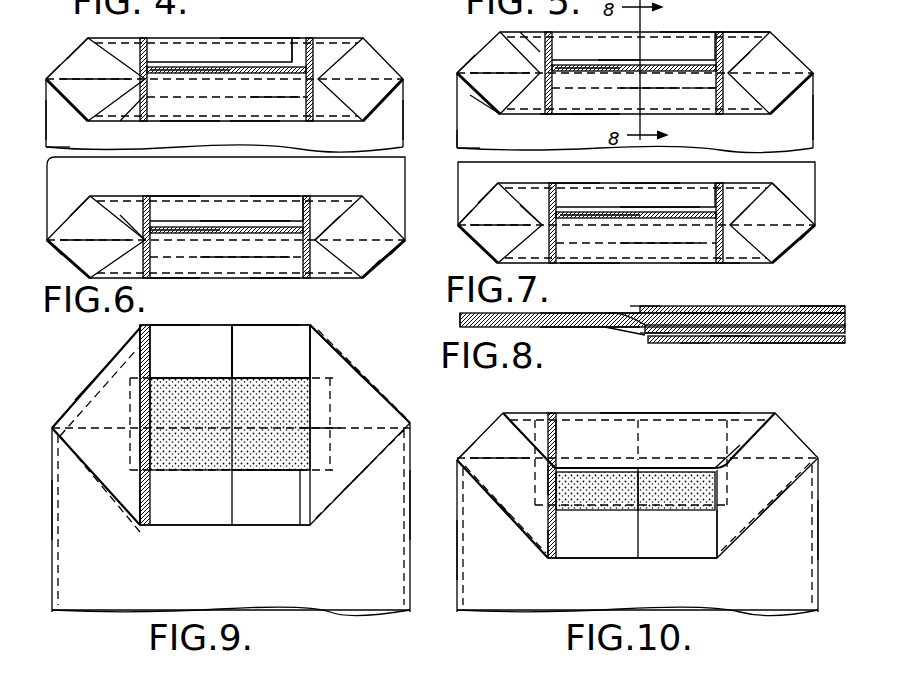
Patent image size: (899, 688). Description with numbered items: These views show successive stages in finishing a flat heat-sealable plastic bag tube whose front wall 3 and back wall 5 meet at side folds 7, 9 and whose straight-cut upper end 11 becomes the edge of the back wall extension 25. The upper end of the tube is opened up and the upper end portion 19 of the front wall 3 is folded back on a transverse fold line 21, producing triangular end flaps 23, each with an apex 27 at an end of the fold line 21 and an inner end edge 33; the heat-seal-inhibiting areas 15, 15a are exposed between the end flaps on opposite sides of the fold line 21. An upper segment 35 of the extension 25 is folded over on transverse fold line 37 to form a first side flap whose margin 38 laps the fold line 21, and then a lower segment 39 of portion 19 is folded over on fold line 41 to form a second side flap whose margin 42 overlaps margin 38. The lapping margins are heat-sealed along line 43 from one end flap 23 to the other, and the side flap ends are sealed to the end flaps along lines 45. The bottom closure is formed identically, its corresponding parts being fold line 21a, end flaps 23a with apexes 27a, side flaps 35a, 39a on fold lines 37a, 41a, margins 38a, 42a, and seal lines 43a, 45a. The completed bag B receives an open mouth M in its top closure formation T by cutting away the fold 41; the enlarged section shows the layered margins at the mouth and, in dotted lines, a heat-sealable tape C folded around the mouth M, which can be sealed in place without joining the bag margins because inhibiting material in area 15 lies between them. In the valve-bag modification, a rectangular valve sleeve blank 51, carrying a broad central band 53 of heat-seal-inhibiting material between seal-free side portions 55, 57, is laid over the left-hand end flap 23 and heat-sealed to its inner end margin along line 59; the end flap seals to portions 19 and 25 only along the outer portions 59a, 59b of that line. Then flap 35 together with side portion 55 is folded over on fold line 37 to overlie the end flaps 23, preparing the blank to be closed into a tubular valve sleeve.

In FIG. 8, the front wall 3 is at (792, 343).
In FIG. 9, the front wall 3 is at (248, 568).
In FIG. 10, the front wall 3 is at (638, 599).
In FIG. 8, the back wall 5 is at (726, 340).
In FIG. 4, the side fold 7 is at (46, 115).
In FIG. 5, the side fold 7 is at (458, 148).
In FIG. 9, the side fold 7 is at (52, 520).
In FIG. 10, the side fold 7 is at (457, 556).
In FIG. 4, the side fold 9 is at (405, 120).
In FIG. 5, the side fold 9 is at (813, 105).
In FIG. 9, the side fold 9 is at (410, 505).
In FIG. 10, the side fold 9 is at (818, 550).
In FIG. 9, the upper end 11 is at (232, 335).
In FIG. 10, the upper end 11 is at (650, 468).
In FIG. 8, the heat-seal-inhibiting area 15 is at (702, 312).
In FIG. 9, the heat-seal-inhibiting area 15 is at (264, 468).
In FIG. 10, the heat-seal-inhibiting area 15 is at (672, 505).
In FIG. 8, the heat-seal-inhibiting area 15a is at (618, 334).
In FIG. 9, the heat-seal-inhibiting area 15a is at (285, 390).
In FIG. 8, the upper end portion of the front wall 19 is at (758, 343).
In FIG. 10, the upper end portion of the front wall 19 is at (712, 560).
In FIG. 4, the fold line 21 is at (72, 82).
In FIG. 5, the fold line 21 is at (494, 72).
In FIG. 8, the fold line 21 is at (656, 343).
In FIG. 9, the fold line 21 is at (300, 428).
In FIG. 10, the fold line 21 is at (500, 462).
In FIG. 6, the fold line 21a is at (74, 243).
In FIG. 7, the fold line 21a is at (484, 227).
In FIG. 4, the end flap 23 is at (85, 60).
In FIG. 5, the end flap 23 is at (488, 106).
In FIG. 9, the end flap 23 is at (92, 398).
In FIG. 10, the end flap 23 is at (500, 500).
In FIG. 6, the end flap 23a is at (82, 218).
In FIG. 7, the end flap 23a is at (490, 205).
In FIG. 8, the upward extension of the back wall 25 is at (565, 330).
In FIG. 9, the upward extension of the back wall 25 is at (300, 330).
In FIG. 4, the apex 27 is at (47, 78).
In FIG. 5, the apex 27 is at (458, 72).
In FIG. 9, the apex 27 is at (52, 428).
In FIG. 10, the apex 27 is at (458, 460).
In FIG. 6, the apex 27a is at (48, 245).
In FIG. 7, the apex 27a is at (458, 226).
In FIG. 9, the inner end edge 33 is at (302, 490).
In FIG. 4, the upper segment of back wall extension 35 is at (236, 45).
In FIG. 5, the upper segment of back wall extension 35 is at (690, 42).
In FIG. 8, the upper segment of back wall extension 35 is at (566, 313).
In FIG. 10, the upper segment of back wall extension 35 is at (700, 425).
In FIG. 6, the first side flap 35a is at (170, 202).
In FIG. 7, the first side flap 35a is at (640, 195).
In FIG. 4, the transverse fold line 37 is at (276, 40).
In FIG. 5, the transverse fold line 37 is at (730, 30).
In FIG. 8, the transverse fold line 37 is at (460, 318).
In FIG. 9, the transverse fold line 37 is at (340, 380).
In FIG. 10, the transverse fold line 37 is at (662, 412).
In FIG. 6, the transverse fold line 37a is at (276, 196).
In FIG. 7, the transverse fold line 37a is at (578, 176).
In FIG. 4, the margin 38 is at (250, 98).
In FIG. 5, the margin 38 is at (640, 95).
In FIG. 8, the margin 38 is at (692, 343).
In FIG. 10, the margin 38 is at (722, 463).
In FIG. 6, the margin 38a is at (214, 260).
In FIG. 7, the margin 38a is at (636, 243).
In FIG. 4, the lower segment of front wall portion 39 is at (182, 118).
In FIG. 5, the lower segment of front wall portion 39 is at (598, 104).
In FIG. 8, the lower segment of front wall portion 39 is at (716, 312).
In FIG. 6, the second side flap 39a is at (160, 272).
In FIG. 7, the second side flap 39a is at (580, 255).
In FIG. 4, the transverse fold line 41 is at (225, 122).
In FIG. 9, the transverse fold line 41 is at (350, 474).
In FIG. 6, the transverse fold line 41a is at (278, 279).
In FIG. 7, the transverse fold line 41a is at (690, 264).
In FIG. 4, the margin 42 is at (300, 55).
In FIG. 5, the margin 42 is at (598, 58).
In FIG. 8, the margin 42 is at (640, 309).
In FIG. 6, the margin 42a is at (232, 214).
In FIG. 7, the margin 42a is at (664, 200).
In FIG. 4, the heat-seal line 43 is at (172, 70).
In FIG. 5, the heat-seal line 43 is at (572, 66).
In FIG. 8, the heat-seal line 43 is at (620, 312).
In FIG. 6, the heat-seal line 43a is at (186, 228).
In FIG. 7, the heat-seal line 43a is at (608, 213).
In FIG. 4, the heat-seal line 45 is at (140, 110).
In FIG. 5, the heat-seal line 45 is at (505, 40).
In FIG. 6, the heat-seal line 45a is at (140, 220).
In FIG. 7, the heat-seal line 45a is at (540, 205).
In FIG. 9, the valve sleeve 51 is at (238, 330).
In FIG. 9, the central band portion 53 is at (202, 395).
In FIG. 9, the side portion 55 is at (170, 335).
In FIG. 9, the side portion 57 is at (195, 518).
In FIG. 10, the side portion 57 is at (590, 542).
In FIG. 9, the heat-seal line 59 is at (140, 443).
In FIG. 10, the heat-seal line 59 is at (548, 480).
In FIG. 9, the portion of seal line 59a is at (140, 500).
In FIG. 10, the portion of seal line 59a is at (548, 545).
In FIG. 9, the portion of seal line 59b is at (140, 345).
In FIG. 10, the portion of seal line 59b is at (556, 432).
In FIG. 4, the bag B is at (42, 137).
In FIG. 5, the bag B is at (455, 145).
In FIG. 8, the heat-sealable tape C is at (810, 302).
In FIG. 5, the open mouth M is at (560, 116).
In FIG. 8, the open mouth M is at (838, 306).
In FIG. 5, the top closure formation T is at (692, 98).
In FIG. 8, the top closure formation T is at (595, 312).